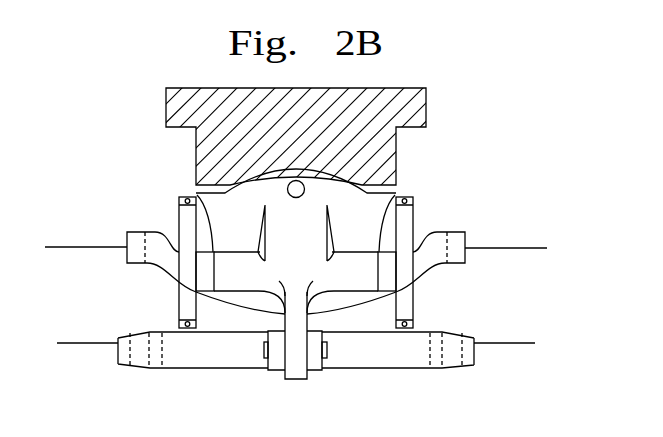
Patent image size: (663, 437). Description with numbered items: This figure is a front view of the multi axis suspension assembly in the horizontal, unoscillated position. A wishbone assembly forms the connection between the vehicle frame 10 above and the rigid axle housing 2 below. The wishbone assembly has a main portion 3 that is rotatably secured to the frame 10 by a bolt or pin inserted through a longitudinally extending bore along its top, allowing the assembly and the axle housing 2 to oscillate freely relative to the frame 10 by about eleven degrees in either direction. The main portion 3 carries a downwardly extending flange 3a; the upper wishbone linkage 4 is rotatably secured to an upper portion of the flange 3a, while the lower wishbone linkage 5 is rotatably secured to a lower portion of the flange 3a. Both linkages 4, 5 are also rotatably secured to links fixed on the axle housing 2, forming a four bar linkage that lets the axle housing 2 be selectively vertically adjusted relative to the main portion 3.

The vehicle frame 10 is at (177, 107).
The main portion 3 is at (292, 247).
The downwardly extending flange 3a is at (298, 363).
The upper wishbone linkage 4 is at (171, 262).
The lower wishbone linkage 5 is at (280, 360).
The rigid axle housing 2 is at (510, 313).